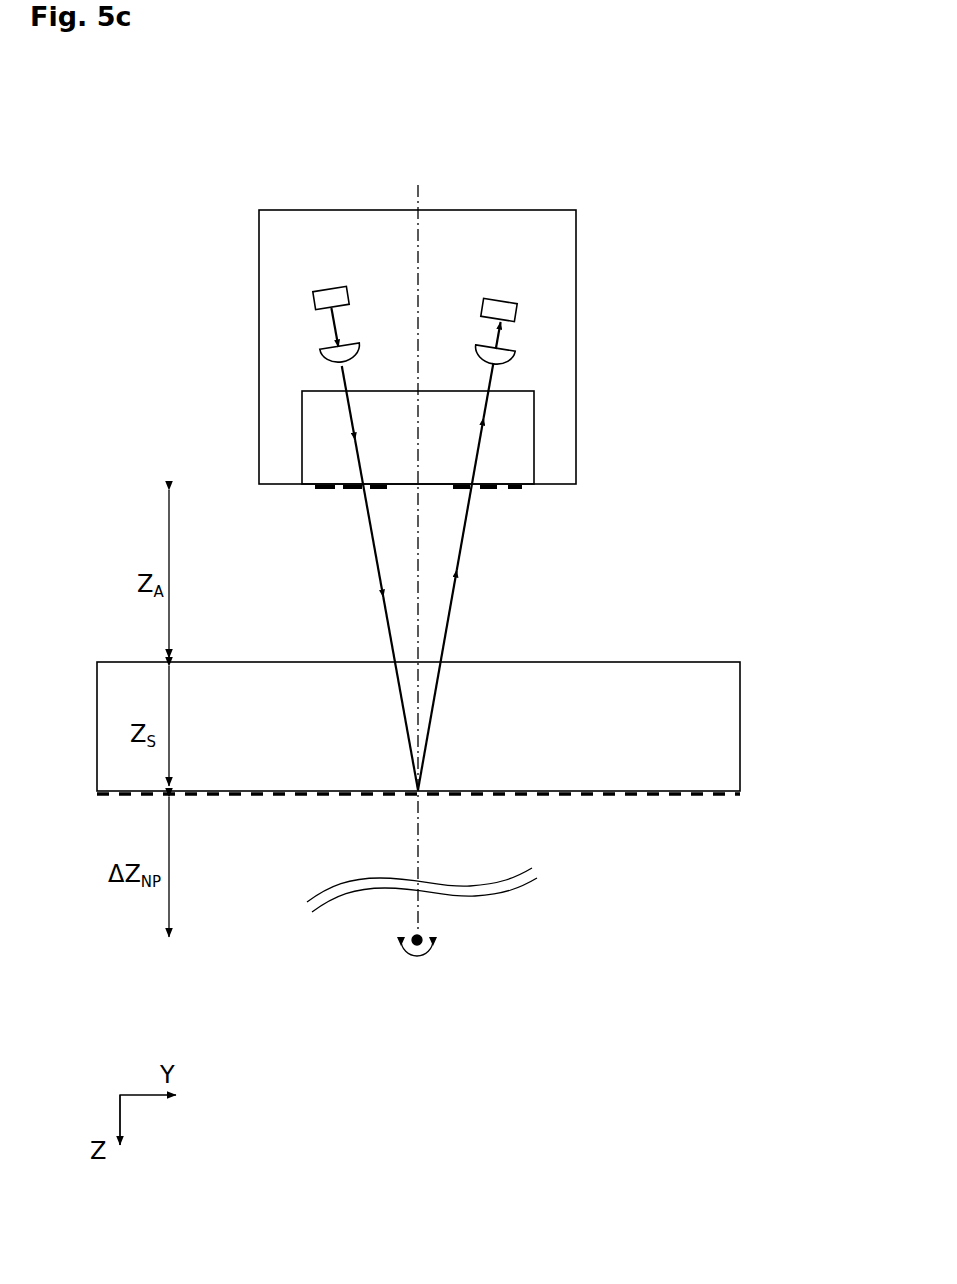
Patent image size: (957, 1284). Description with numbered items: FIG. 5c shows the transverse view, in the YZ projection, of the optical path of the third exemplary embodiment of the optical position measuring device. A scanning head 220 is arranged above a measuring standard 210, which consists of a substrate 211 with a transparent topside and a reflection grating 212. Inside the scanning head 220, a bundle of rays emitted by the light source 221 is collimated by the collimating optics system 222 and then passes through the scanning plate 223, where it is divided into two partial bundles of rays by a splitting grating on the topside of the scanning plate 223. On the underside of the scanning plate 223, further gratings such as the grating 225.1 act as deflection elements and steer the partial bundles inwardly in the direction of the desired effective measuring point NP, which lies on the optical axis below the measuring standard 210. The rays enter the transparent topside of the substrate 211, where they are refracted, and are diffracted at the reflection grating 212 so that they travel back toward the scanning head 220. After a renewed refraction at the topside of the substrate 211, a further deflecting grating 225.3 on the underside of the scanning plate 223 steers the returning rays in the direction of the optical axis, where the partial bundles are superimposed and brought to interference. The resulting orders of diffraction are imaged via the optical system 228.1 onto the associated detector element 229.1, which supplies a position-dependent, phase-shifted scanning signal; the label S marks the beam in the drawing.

The scanning head 220 is at (248, 306).
The light source 221 is at (328, 296).
The collimating optics system 222 is at (330, 354).
The scanning plate 223 is at (527, 452).
The grating 225.1 is at (325, 490).
The grating 225.3 is at (490, 490).
The optical system 228.1 is at (508, 353).
The detector element 229.1 is at (510, 305).
The measuring standard 210 is at (426, 759).
The substrate 211 is at (722, 747).
The reflection grating 212 is at (673, 794).
The measuring beam S is at (333, 327).
The effective measuring point NP is at (397, 943).